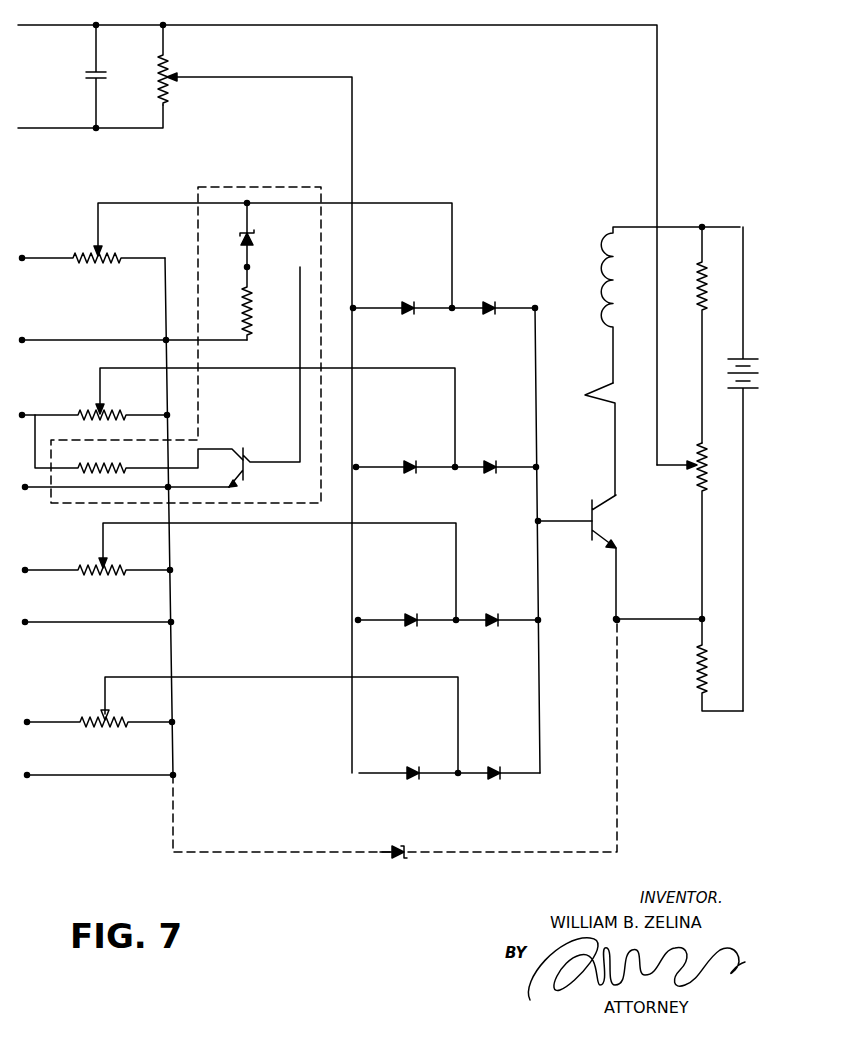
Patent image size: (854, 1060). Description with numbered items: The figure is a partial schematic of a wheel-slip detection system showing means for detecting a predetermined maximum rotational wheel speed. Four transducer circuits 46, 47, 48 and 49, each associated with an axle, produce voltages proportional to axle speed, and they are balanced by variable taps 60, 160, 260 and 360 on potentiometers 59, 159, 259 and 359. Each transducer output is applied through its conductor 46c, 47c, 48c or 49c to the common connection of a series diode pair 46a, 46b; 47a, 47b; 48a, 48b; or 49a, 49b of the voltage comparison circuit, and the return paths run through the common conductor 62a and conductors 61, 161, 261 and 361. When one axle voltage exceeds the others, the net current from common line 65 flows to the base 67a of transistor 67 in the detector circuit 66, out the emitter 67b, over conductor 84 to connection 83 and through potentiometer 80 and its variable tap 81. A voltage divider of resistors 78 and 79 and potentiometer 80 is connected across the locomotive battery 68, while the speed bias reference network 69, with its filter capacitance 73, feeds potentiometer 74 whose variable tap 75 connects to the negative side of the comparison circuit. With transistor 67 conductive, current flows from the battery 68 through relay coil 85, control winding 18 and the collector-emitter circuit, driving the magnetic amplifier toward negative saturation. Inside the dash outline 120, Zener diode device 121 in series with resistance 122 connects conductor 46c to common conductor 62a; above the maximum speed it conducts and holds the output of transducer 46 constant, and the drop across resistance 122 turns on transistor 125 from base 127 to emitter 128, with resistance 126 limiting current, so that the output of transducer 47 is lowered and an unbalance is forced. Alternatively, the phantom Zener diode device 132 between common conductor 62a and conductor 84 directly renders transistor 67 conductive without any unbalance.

The speed bias reference network 69 is at (52, 88).
The capacitance 73 is at (90, 74).
The potentiometer 74 is at (154, 72).
The variable tap 75 is at (180, 76).
The dash outline 120 is at (260, 188).
The conductor 46c is at (140, 205).
The variable tap 60 is at (98, 244).
The potentiometer 59 is at (100, 272).
The transducer 46 is at (62, 306).
The common conductor 62a is at (166, 298).
The conductor 61 is at (80, 339).
The Zener diode device 121 is at (258, 242).
The resistance 122 is at (253, 318).
The conductor 47c is at (262, 368).
The variable tap 160 is at (90, 400).
The potentiometer 159 is at (124, 406).
The transducer 47 is at (27, 453).
The resistance 126 is at (111, 456).
The transistor 125 is at (248, 460).
The emitter 128 is at (234, 472).
The base 127 is at (246, 476).
The conductor 161 is at (32, 490).
The conductor 48c is at (290, 523).
The variable tap 260 is at (96, 553).
The potentiometer 259 is at (116, 562).
The transducer 48 is at (32, 608).
The conductor 261 is at (100, 620).
The conductor 49c is at (255, 676).
The variable tap 360 is at (98, 703).
The potentiometer 359 is at (115, 732).
The transducer 49 is at (34, 758).
The conductor 361 is at (98, 778).
The diode 46a is at (406, 302).
The diode 46b is at (490, 302).
The diode 47a is at (400, 461).
The diode 47b is at (490, 461).
The diode 48a is at (412, 614).
The diode 48b is at (492, 614).
The diode 49a is at (414, 766).
The diode 49b is at (496, 766).
The common line 65 is at (540, 558).
The Zener diode device 132 is at (408, 848).
The relay coil 85 is at (598, 270).
The control winding 18 is at (598, 390).
The detector circuit 66 is at (588, 448).
The transistor 67 is at (600, 526).
The base 67a is at (586, 502).
The emitter 67b is at (618, 546).
The resistor 78 is at (694, 274).
The locomotive battery 68 is at (738, 356).
The variable tap 81 is at (692, 455).
The potentiometer 80 is at (696, 484).
The conductor 84 is at (664, 617).
The connection 83 is at (706, 619).
The resistor 79 is at (696, 686).